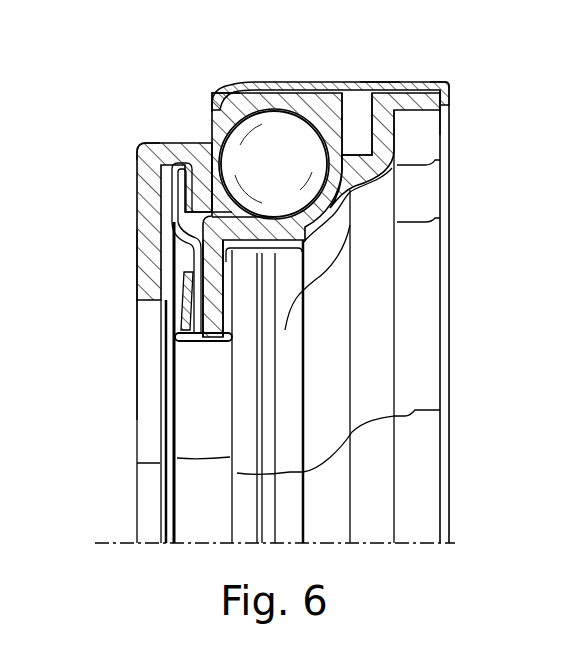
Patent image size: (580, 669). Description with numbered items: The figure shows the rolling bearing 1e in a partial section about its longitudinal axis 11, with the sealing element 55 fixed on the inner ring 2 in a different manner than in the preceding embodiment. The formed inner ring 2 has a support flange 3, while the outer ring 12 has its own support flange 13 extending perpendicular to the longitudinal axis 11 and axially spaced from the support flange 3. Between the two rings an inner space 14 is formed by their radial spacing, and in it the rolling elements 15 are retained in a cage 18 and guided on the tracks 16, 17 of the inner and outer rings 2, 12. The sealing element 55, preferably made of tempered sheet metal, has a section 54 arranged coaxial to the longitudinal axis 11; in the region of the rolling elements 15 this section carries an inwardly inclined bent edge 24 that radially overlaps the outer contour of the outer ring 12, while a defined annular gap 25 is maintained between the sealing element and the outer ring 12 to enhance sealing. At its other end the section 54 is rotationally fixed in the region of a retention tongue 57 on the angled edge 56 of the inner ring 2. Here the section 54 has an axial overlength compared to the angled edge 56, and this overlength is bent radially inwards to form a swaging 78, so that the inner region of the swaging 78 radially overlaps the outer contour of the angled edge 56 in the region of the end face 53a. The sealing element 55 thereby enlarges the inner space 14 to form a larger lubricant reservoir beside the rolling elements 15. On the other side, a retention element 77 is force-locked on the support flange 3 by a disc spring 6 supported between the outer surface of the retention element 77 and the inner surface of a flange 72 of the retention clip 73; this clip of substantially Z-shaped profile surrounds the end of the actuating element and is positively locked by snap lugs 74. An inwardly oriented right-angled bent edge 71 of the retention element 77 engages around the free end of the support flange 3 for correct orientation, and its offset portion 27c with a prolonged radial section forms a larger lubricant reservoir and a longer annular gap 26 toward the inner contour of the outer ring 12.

The rolling bearing 1e is at (113, 262).
The inner ring 2 is at (307, 200).
The support flange 3 is at (237, 303).
The disc spring 6 is at (183, 295).
The longitudinal axis 11 is at (104, 543).
The outer ring 12 is at (163, 147).
The support flange 13 is at (140, 283).
The inner space 14 is at (358, 122).
The rolling elements 15 is at (287, 170).
The track 16 is at (330, 206).
The track 17 is at (220, 177).
The cage 18 is at (188, 178).
The bent edge 24 is at (230, 98).
The annular gap 25 is at (277, 92).
The annular gap 26 is at (137, 185).
The offset portion 27c is at (168, 195).
The end face 53a is at (450, 103).
The section 54 is at (318, 84).
The sealing element 55 is at (380, 75).
The angled edge 56 is at (446, 115).
The retention tongue 57 is at (423, 88).
The bent edge 71 is at (213, 343).
The flange 72 is at (178, 322).
The retention clip 73 is at (270, 252).
The snap lugs 74 is at (278, 252).
The retention element 77 is at (190, 262).
The swaging 78 is at (454, 95).